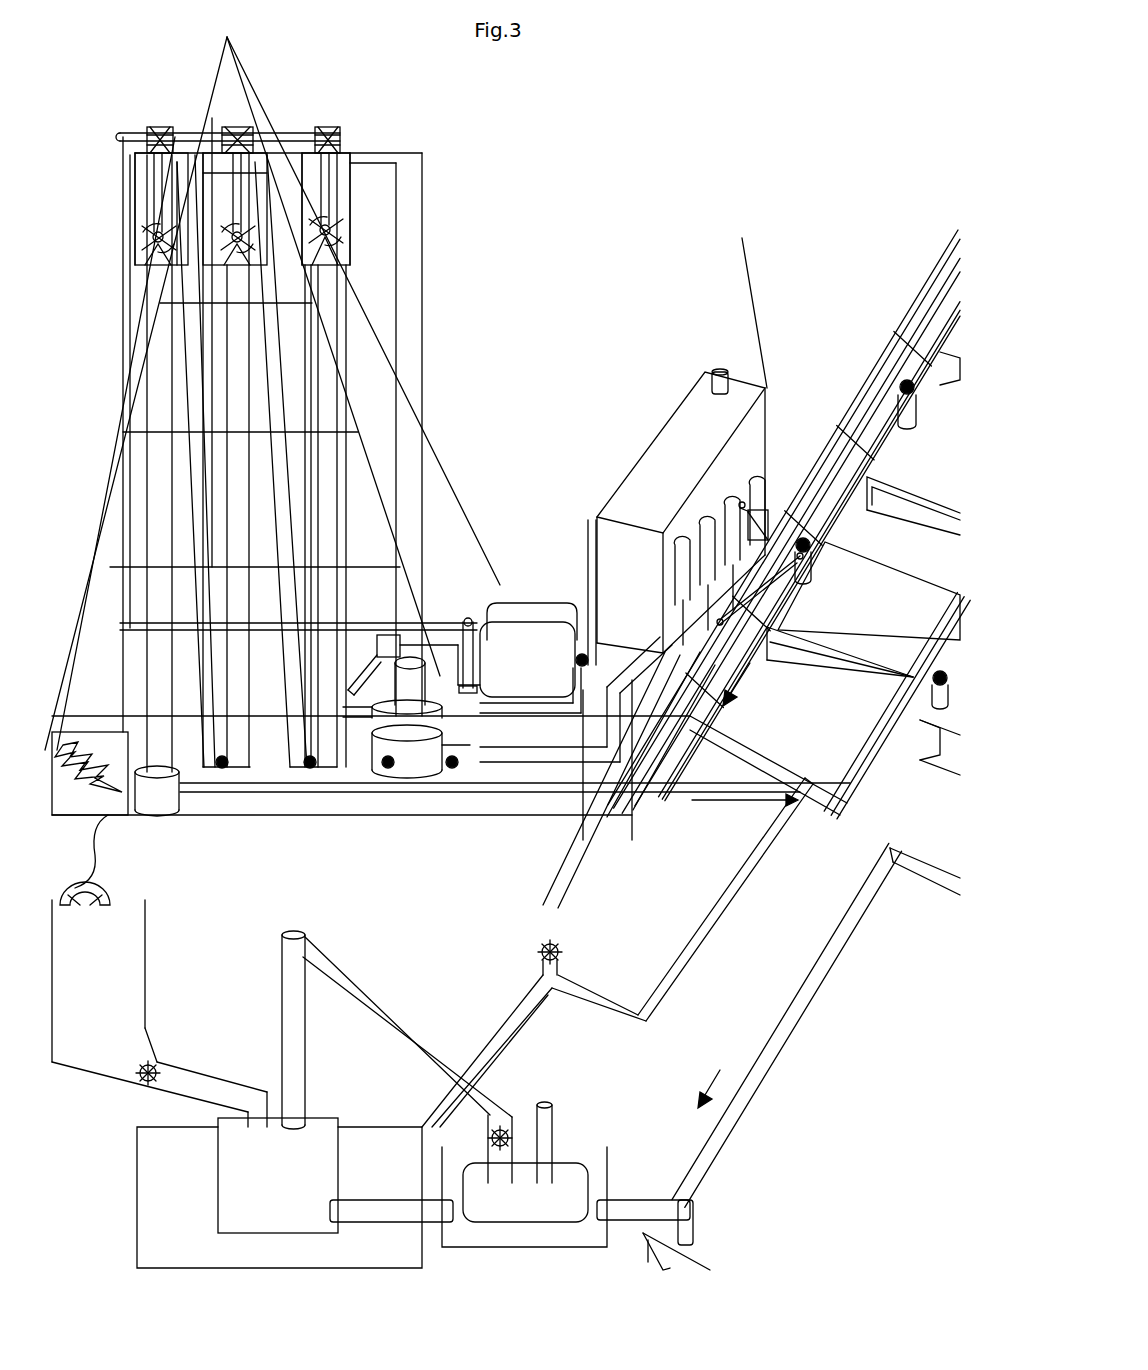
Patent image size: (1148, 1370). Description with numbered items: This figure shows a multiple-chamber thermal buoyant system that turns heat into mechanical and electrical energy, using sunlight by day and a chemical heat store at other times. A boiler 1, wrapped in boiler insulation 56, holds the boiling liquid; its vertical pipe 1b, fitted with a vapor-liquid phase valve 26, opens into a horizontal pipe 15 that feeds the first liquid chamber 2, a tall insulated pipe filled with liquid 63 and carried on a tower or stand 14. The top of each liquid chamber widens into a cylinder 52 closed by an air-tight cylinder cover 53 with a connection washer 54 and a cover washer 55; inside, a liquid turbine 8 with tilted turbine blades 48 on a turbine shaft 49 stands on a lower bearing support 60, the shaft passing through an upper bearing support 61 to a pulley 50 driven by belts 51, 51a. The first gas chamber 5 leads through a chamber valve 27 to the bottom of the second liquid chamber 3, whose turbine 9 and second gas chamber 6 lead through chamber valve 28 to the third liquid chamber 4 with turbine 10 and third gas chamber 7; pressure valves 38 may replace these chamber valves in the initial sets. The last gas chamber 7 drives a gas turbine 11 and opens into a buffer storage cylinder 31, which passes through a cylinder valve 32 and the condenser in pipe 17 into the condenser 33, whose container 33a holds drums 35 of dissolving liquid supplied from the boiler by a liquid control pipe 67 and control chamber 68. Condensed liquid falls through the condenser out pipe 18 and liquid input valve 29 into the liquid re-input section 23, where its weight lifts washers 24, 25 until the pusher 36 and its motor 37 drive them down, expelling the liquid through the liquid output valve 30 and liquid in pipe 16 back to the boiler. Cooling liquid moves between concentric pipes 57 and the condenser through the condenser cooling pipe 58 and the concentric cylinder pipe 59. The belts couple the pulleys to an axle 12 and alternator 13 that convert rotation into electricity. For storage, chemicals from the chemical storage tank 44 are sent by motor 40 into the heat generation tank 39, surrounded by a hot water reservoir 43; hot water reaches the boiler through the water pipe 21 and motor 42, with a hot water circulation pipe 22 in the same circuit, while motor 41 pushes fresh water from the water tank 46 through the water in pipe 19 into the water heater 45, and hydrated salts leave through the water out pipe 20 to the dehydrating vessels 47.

The boiler 1 is at (912, 437).
The vertical pipe 1b is at (903, 395).
The liquid chamber 2 is at (147, 402).
The liquid chamber 3 is at (217, 347).
The liquid chamber 4 is at (337, 387).
The gas chamber 5 is at (183, 370).
The gas chamber 6 is at (265, 333).
The gas chamber 7 is at (423, 290).
The liquid turbine 8 is at (158, 237).
The liquid turbine 9 is at (350, 190).
The liquid turbine 10 is at (340, 235).
The gas turbine 11 is at (477, 643).
The axle 12 is at (118, 472).
The alternator 13 is at (110, 813).
The tower or stand 14 is at (160, 213).
The horizontal pipe 15 is at (672, 802).
The liquid in pipe 16 is at (767, 792).
The condenser in pipe 17 is at (590, 580).
The condenser out pipe 18 is at (661, 762).
The water in pipe 19 is at (560, 1163).
The water out pipe 20 is at (352, 1200).
The water pipe 21 is at (370, 995).
The hot water circulation pipe 22 is at (723, 975).
The liquid re-input section 23 is at (408, 773).
The washer 24 is at (473, 653).
The washer 25 is at (418, 755).
The vapor-liquid phase valve 26 is at (778, 630).
The chamber valve 27 is at (205, 785).
The chamber valve 28 is at (305, 770).
The liquid input valve 29 is at (472, 700).
The liquid output valve 30 is at (378, 770).
The cylinder 31 is at (556, 856).
The cylinder valve 32 is at (611, 780).
The condenser 33 is at (627, 467).
The container 33a is at (655, 433).
The drums 35 is at (753, 440).
The pusher with switching mechanism 36 is at (400, 650).
The motor 37 is at (385, 680).
The pressure valve 38 is at (222, 770).
The heat generation tank 39 is at (278, 1175).
The motor 40 is at (150, 1068).
The motor 41 is at (500, 1130).
The motor 42 is at (541, 950).
The hot water reservoir 43 is at (279, 1197).
The chemical storage tank 44 is at (159, 1010).
The water heater 45 is at (607, 1160).
The water tank 46 is at (598, 1163).
The dehydrating vessel 47 is at (695, 1233).
The turbine blades 48 is at (337, 203).
The turbine shaft 49 is at (337, 223).
The pulley 50 is at (337, 130).
The belt 51 is at (293, 132).
The belt 51a is at (183, 135).
The cylinder 52 is at (140, 170).
The cylinder cover 53 is at (232, 330).
The connection washer or gasket 54 is at (337, 173).
The cover washer or gasket 55 is at (283, 160).
The insulation of boiler 56 is at (837, 650).
The concentric pipes 57 is at (347, 410).
The condenser cooling pipe 58 is at (365, 655).
The concentric cylinder pipe 59 is at (597, 517).
The lower bearing support 60 is at (340, 228).
The upper bearing support 61 is at (142, 132).
The liquid-chamber's liquid 63 is at (155, 520).
The liquid control pipe 67 is at (848, 435).
The control chamber 68 is at (855, 440).